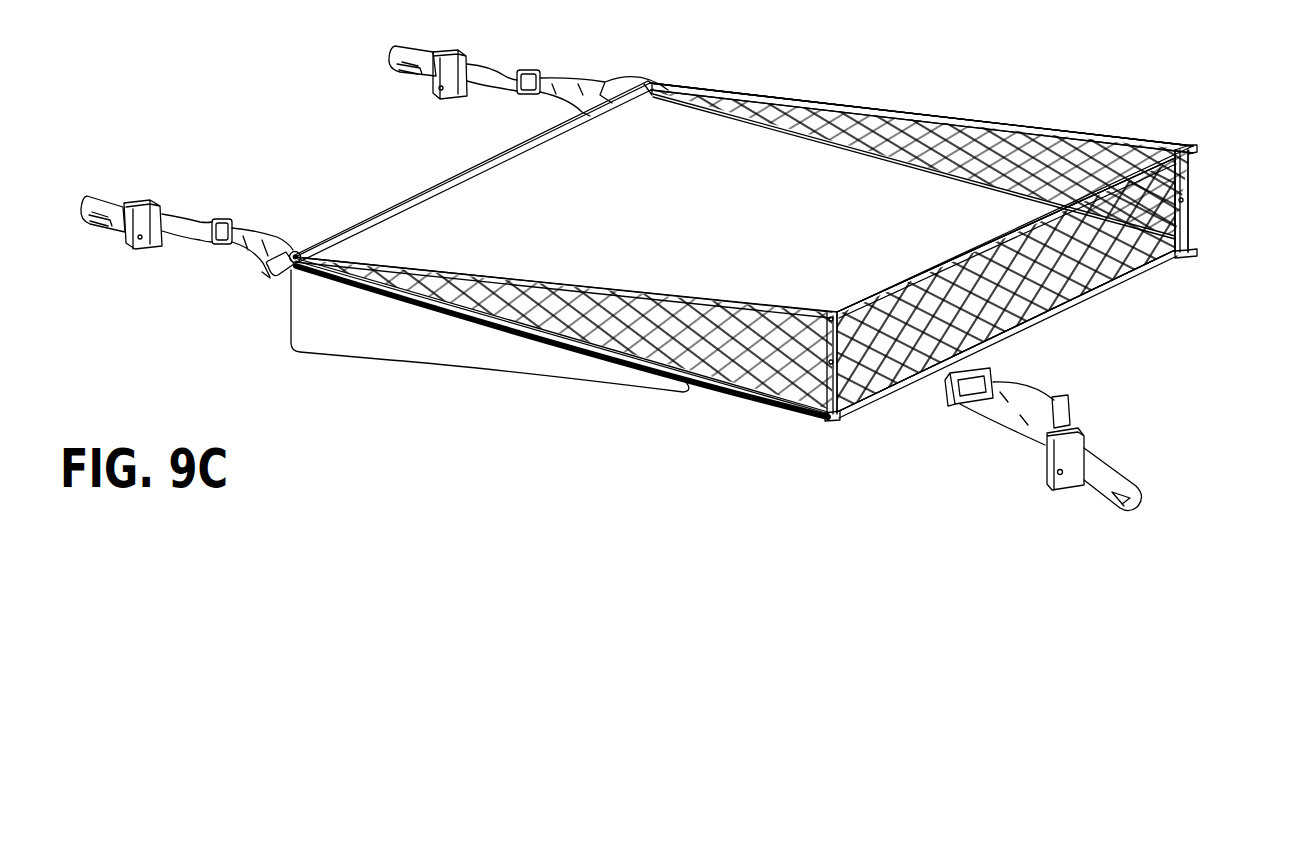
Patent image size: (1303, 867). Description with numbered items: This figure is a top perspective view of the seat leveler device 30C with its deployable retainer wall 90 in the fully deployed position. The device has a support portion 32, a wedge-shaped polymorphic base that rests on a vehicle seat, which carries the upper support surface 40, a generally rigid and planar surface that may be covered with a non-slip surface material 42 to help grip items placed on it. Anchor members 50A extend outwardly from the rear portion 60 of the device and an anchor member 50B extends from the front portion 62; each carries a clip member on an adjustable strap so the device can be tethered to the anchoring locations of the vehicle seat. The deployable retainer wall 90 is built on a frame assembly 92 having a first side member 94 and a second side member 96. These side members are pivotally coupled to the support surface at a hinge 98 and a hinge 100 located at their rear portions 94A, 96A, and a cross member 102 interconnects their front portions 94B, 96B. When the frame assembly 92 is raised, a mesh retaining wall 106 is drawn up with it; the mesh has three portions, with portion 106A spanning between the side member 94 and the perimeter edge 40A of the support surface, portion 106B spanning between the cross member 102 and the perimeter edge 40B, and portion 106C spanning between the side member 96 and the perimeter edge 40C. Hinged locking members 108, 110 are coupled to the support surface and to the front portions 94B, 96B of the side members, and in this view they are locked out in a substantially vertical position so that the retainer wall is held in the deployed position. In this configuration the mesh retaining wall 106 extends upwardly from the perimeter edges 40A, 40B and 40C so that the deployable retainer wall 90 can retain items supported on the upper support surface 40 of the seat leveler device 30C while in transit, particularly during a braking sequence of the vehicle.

The seat leveler device 30C is at (816, 60).
The support portion 32 is at (286, 349).
The upper support surface 40 is at (1008, 216).
The perimeter edge 40A is at (577, 338).
The perimeter edge 40B is at (1017, 338).
The perimeter edge 40C is at (853, 135).
The non-slip surface material 42 is at (1045, 213).
The anchor member 50A is at (386, 43).
The anchor member 50B is at (1100, 438).
The rear portion 60 is at (425, 192).
The front portion 62 is at (1083, 310).
The deployable retainer wall 90 is at (1172, 292).
The frame assembly 92 is at (784, 297).
The first side member 94 is at (708, 318).
The rear portion of first side member 94A is at (296, 250).
The front portion of first side member 94B is at (813, 320).
The second side member 96 is at (948, 122).
The rear portion of second side member 96A is at (684, 88).
The front portion of second side member 96B is at (1186, 146).
The hinge 98 is at (280, 272).
The hinge 100 is at (650, 83).
The cross member 102 is at (950, 262).
The mesh retaining wall 106 is at (907, 342).
The mesh retaining wall portion 106A is at (668, 343).
The mesh retaining wall portion 106B is at (1125, 245).
The mesh retaining wall portion 106C is at (990, 160).
The hinged locking member 108 is at (856, 368).
The hinged locking member 110 is at (1200, 204).